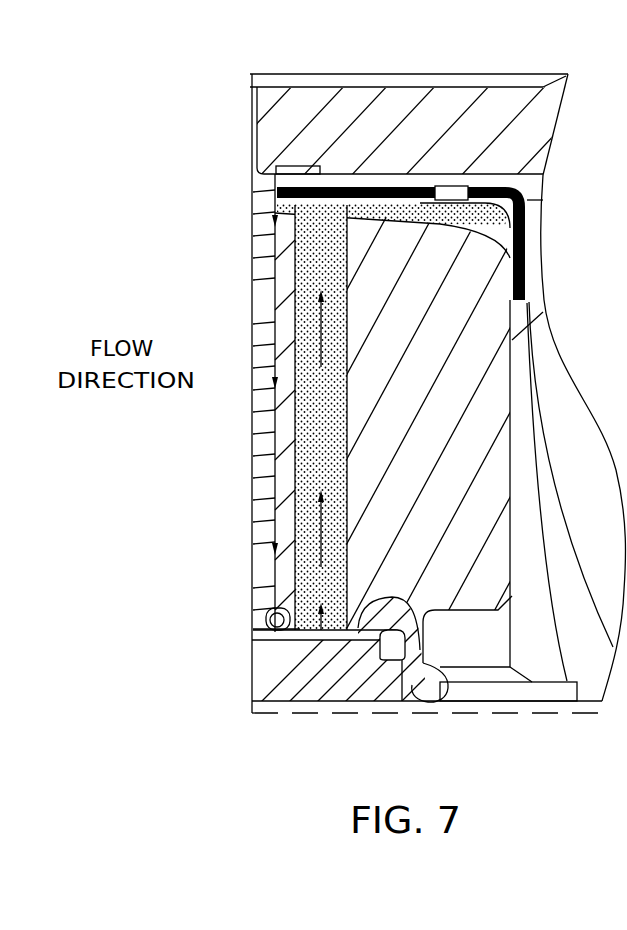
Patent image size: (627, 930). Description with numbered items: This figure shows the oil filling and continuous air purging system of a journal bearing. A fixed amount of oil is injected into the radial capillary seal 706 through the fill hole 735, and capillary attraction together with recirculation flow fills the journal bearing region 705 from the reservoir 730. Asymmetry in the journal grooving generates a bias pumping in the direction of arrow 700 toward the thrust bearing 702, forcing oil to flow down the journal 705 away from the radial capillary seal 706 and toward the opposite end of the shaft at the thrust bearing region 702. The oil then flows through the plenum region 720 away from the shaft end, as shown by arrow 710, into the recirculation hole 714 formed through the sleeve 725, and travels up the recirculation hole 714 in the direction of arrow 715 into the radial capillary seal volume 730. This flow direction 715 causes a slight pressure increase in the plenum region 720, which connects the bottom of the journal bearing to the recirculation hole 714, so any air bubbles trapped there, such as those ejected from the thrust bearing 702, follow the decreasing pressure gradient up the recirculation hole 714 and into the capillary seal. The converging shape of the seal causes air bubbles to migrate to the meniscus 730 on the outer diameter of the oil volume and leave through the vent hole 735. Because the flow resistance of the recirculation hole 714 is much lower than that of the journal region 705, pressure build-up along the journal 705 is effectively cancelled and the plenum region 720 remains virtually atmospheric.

The arrow 700 is at (276, 553).
The thrust bearing 702 is at (252, 690).
The journal bearing region 705 is at (276, 300).
The radial capillary seal 706 is at (323, 330).
The arrow 710 is at (300, 632).
The recirculation hole 714 is at (420, 650).
The arrow 715 is at (347, 330).
The plenum region 720 is at (340, 632).
The sleeve 725 is at (483, 593).
The reservoir 730 is at (528, 221).
The fill hole 735 is at (449, 186).